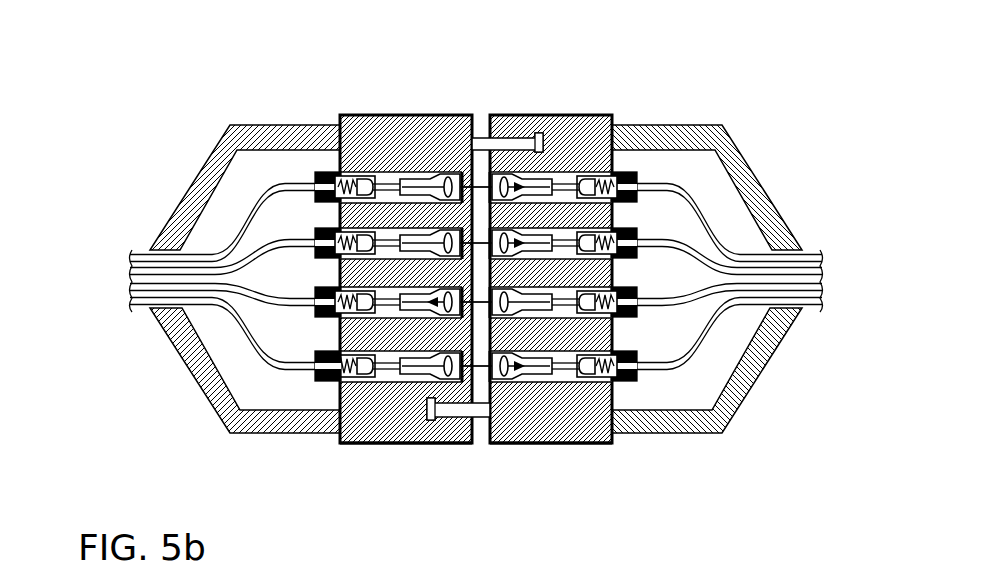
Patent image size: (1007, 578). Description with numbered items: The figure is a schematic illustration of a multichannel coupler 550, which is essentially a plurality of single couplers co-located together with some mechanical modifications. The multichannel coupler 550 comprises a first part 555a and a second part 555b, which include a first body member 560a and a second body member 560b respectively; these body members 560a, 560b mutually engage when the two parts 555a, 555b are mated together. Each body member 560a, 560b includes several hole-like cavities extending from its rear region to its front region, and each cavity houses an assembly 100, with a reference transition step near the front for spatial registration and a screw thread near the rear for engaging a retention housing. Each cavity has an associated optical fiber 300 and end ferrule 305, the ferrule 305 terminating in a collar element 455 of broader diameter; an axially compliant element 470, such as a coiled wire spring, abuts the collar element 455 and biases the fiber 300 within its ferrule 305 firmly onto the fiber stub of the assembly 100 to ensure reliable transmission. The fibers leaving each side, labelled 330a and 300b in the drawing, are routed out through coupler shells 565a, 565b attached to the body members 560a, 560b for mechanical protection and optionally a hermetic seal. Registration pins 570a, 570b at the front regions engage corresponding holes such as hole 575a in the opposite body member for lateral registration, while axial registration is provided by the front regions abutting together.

The multichannel coupler 550 is at (237, 46).
The collar element 455 is at (372, 180).
The assembly 100 is at (415, 180).
The first body member 560a is at (443, 115).
The second body member 560b is at (585, 125).
The registration pin 570a is at (508, 140).
The registration pin 570b is at (478, 415).
The hole 575a is at (538, 140).
The coupler shell 565a is at (255, 130).
The coupler shell 565b is at (760, 150).
The optical fiber 330a is at (240, 218).
The optical fiber 300b is at (725, 230).
The axially compliant element 470 is at (323, 380).
The first part 555a is at (415, 447).
The second part 555b is at (536, 450).
The optical fiber 300 is at (591, 411).
The ferrule 305 is at (562, 380).